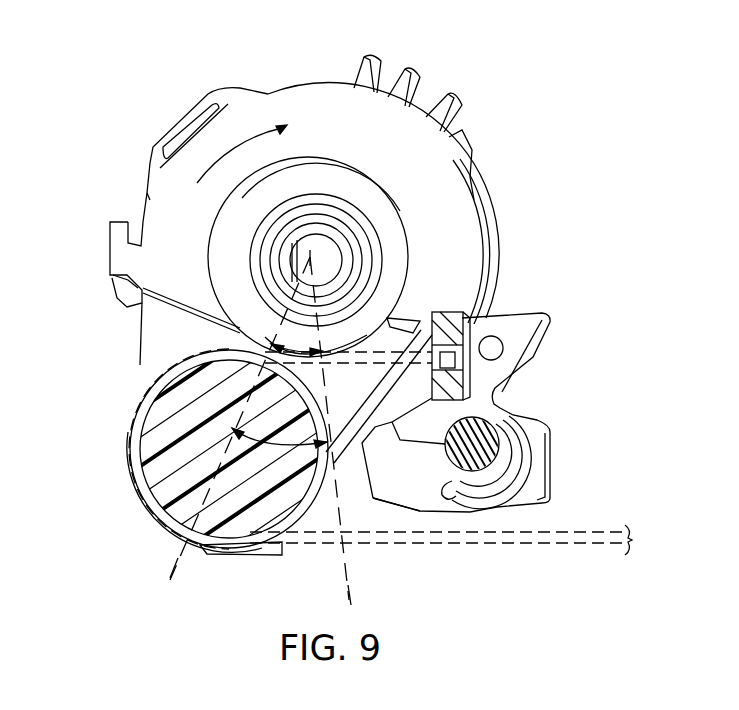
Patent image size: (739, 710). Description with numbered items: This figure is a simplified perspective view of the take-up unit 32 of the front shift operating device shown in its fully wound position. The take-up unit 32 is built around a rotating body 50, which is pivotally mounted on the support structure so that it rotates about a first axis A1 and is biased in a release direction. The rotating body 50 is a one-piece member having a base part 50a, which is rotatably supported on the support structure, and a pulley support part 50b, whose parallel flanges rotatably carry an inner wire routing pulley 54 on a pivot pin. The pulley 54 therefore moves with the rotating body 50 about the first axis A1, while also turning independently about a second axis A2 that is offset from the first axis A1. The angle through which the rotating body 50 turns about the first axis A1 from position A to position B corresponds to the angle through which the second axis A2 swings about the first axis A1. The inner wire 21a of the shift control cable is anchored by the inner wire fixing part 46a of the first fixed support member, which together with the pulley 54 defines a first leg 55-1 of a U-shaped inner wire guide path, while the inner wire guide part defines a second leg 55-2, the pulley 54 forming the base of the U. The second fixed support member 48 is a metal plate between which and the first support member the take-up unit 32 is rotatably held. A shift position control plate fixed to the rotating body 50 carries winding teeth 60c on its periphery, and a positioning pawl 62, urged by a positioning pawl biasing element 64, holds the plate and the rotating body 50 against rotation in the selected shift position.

The rotating body 50 is at (285, 82).
The winding teeth 60c is at (420, 77).
The take-up unit 32 is at (510, 191).
The base part 50a is at (173, 220).
The pulley support part 50b is at (165, 342).
The first axis A1 is at (310, 256).
The first leg 55-1 is at (402, 328).
The inner wire fixing part 46a is at (450, 318).
The second fixed support member 48 is at (548, 342).
The positioning pawl biasing element 64 is at (505, 451).
The positioning pawl 62 is at (393, 483).
The inner wire routing pulley 54 is at (157, 507).
The second axis A2 is at (240, 440).
The inner wire 21a is at (598, 540).
The second leg 55-2 is at (530, 556).
The position A is at (350, 592).
The position B is at (172, 578).